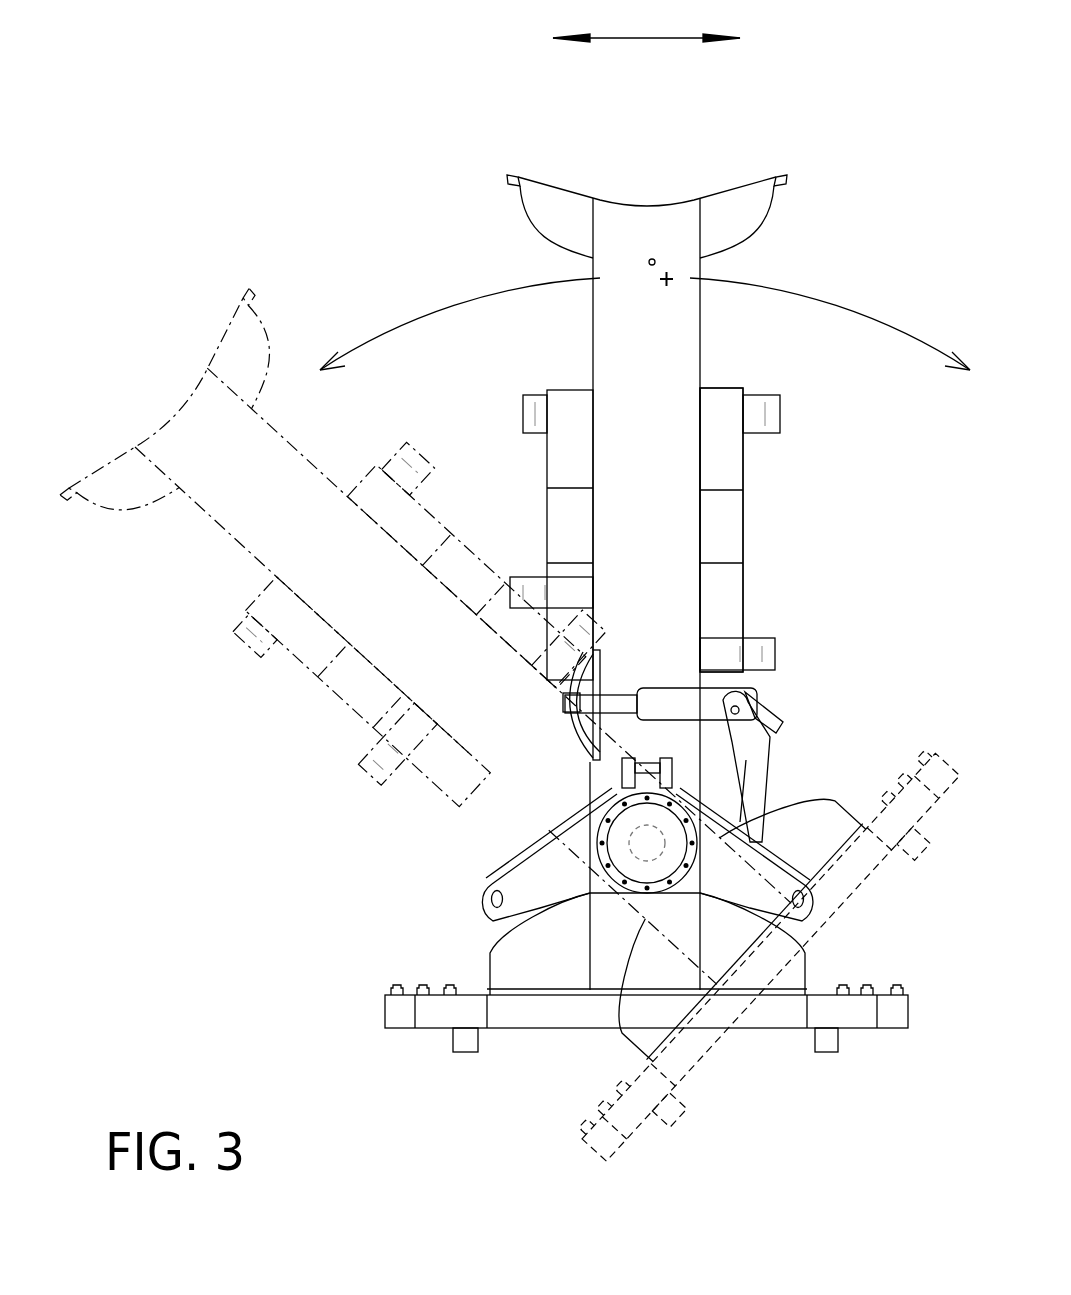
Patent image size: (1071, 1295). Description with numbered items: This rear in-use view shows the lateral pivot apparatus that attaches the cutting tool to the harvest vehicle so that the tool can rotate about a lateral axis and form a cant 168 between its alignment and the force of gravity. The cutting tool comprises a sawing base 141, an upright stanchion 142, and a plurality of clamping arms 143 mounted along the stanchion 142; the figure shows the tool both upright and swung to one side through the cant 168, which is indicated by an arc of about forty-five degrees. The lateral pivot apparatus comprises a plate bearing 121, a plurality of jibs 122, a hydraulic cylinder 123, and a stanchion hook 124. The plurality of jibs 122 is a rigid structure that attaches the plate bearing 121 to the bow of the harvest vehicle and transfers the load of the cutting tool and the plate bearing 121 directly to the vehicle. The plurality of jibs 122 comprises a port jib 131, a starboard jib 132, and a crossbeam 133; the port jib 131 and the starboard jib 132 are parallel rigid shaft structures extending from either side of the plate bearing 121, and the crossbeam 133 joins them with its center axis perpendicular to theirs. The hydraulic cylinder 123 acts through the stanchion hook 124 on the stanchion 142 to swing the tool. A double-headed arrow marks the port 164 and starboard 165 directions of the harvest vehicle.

The plate bearing 121 is at (670, 882).
The plurality of jibs 122 is at (423, 848).
The hydraulic cylinder 123 is at (680, 706).
The stanchion hook 124 is at (750, 782).
The port jib 131 is at (517, 877).
The starboard jib 132 is at (762, 862).
The crossbeam 133 is at (605, 887).
The sawing base 141 is at (870, 1010).
The stanchion 142 is at (658, 435).
The plurality of clamping arms 143 is at (735, 526).
The port direction 164 is at (769, 37).
The starboard direction 165 is at (598, 34).
The cant 168 is at (420, 322).